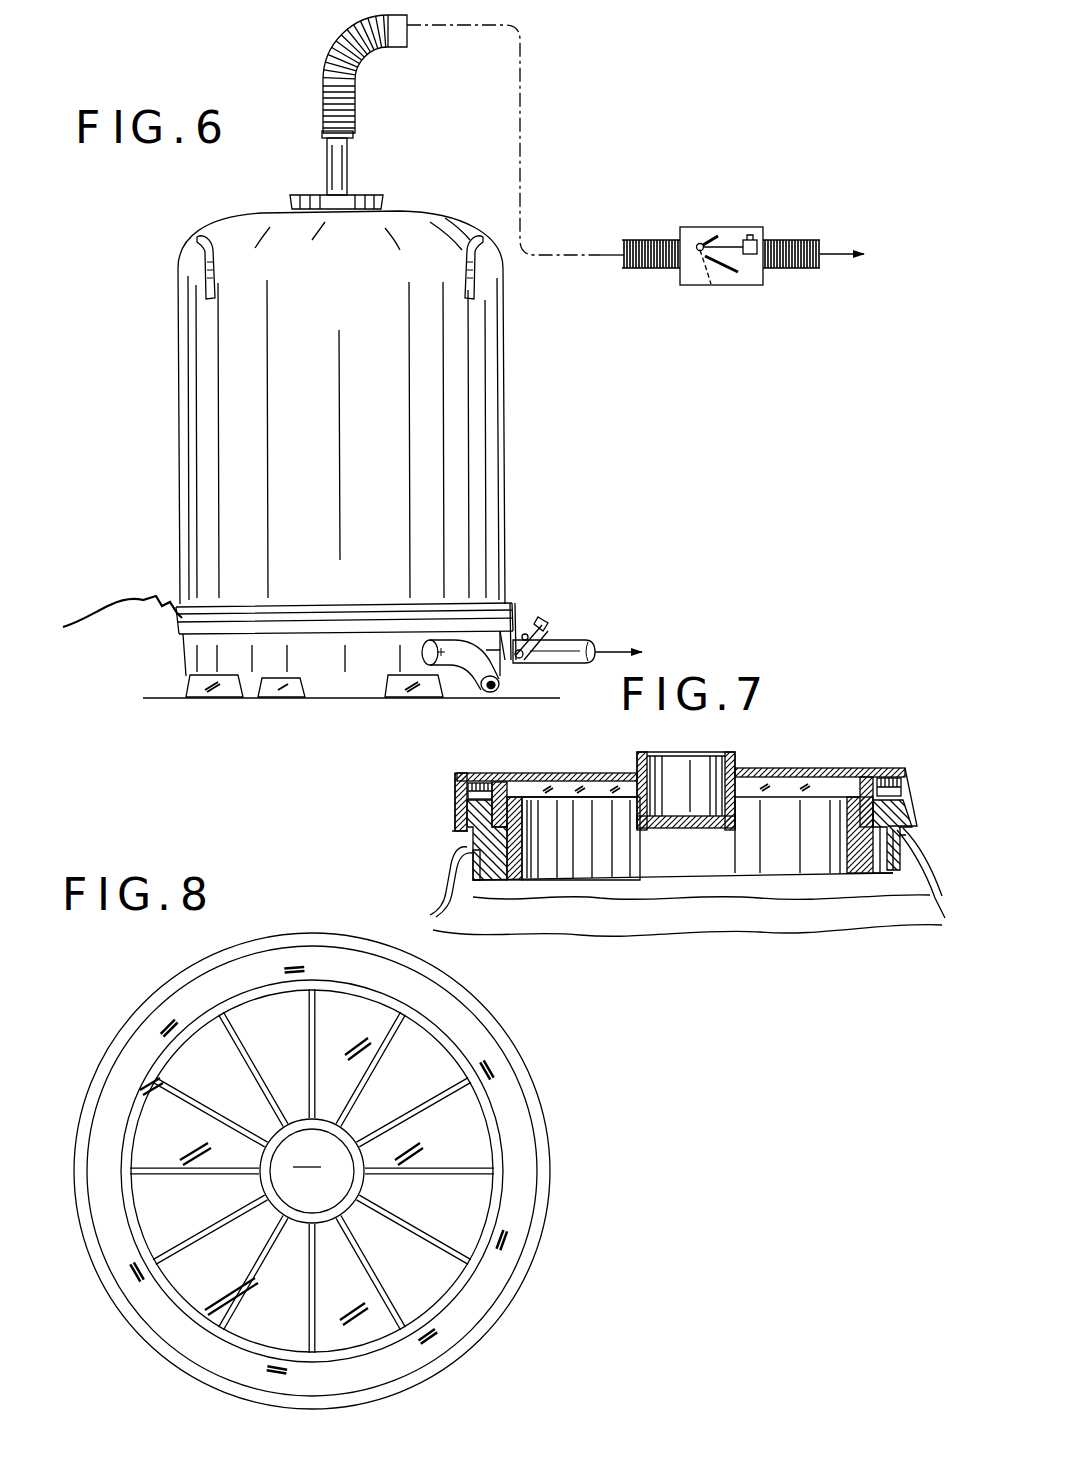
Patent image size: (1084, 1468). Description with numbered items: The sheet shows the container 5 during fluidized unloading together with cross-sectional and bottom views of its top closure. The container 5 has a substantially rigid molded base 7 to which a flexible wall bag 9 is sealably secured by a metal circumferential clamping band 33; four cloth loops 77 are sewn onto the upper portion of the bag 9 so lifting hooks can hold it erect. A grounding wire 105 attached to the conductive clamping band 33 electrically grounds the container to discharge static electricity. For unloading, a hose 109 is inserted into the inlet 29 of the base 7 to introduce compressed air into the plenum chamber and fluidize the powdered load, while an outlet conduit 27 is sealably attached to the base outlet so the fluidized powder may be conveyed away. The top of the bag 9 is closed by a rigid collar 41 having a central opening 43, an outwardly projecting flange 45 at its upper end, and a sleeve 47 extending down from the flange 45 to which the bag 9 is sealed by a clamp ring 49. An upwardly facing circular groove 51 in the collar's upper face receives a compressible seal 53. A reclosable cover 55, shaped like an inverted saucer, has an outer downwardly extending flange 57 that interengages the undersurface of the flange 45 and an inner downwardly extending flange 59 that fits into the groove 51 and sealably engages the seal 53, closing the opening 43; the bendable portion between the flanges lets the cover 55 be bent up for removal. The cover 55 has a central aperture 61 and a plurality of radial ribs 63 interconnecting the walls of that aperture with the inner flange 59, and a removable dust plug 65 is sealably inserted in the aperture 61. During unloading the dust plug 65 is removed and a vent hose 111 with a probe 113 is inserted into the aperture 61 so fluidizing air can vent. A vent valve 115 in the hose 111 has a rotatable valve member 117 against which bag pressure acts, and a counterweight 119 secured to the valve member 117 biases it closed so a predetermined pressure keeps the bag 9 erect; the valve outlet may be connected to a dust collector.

In FIG. 6, the container 5 is at (541, 486).
In FIG. 6, the base 7 is at (186, 684).
In FIG. 6, the flexible wall bag 9 is at (506, 422).
In FIG. 6, the outlet conduit 27 is at (568, 638).
In FIG. 6, the inlet 29 is at (440, 668).
In FIG. 6, the clamping band 33 is at (327, 610).
In FIG. 7, the collar 41 is at (631, 882).
In FIG. 7, the central opening 43 is at (856, 874).
In FIG. 7, the flange 45 is at (896, 812).
In FIG. 7, the sleeve 47 is at (527, 881).
In FIG. 7, the clamp ring 49 is at (910, 836).
In FIG. 7, the circular groove 51 is at (898, 838).
In FIG. 7, the compressible seal 53 is at (880, 873).
In FIG. 6, the cover 55 is at (380, 192).
In FIG. 7, the cover 55 is at (839, 763).
In FIG. 8, the cover 55 is at (536, 1076).
In FIG. 7, the outer flange 57 is at (455, 790).
In FIG. 8, the outer flange 57 is at (548, 1163).
In FIG. 7, the inner flange 59 is at (473, 828).
In FIG. 8, the inner flange 59 is at (500, 1230).
In FIG. 7, the central aperture 61 is at (722, 832).
In FIG. 8, the central aperture 61 is at (312, 1171).
In FIG. 7, the radial ribs 63 is at (576, 790).
In FIG. 8, the radial ribs 63 is at (422, 1245).
In FIG. 7, the dust plug 65 is at (698, 752).
In FIG. 6, the cloth loops 77 is at (197, 266).
In FIG. 6, the grounding wire 105 is at (143, 598).
In FIG. 6, the hose 109 is at (456, 692).
In FIG. 6, the vent hose 111 is at (363, 64).
In FIG. 6, the probe 113 is at (348, 166).
In FIG. 6, the vent valve 115 is at (720, 226).
In FIG. 6, the valve member 117 is at (712, 285).
In FIG. 6, the counterweight 119 is at (758, 240).